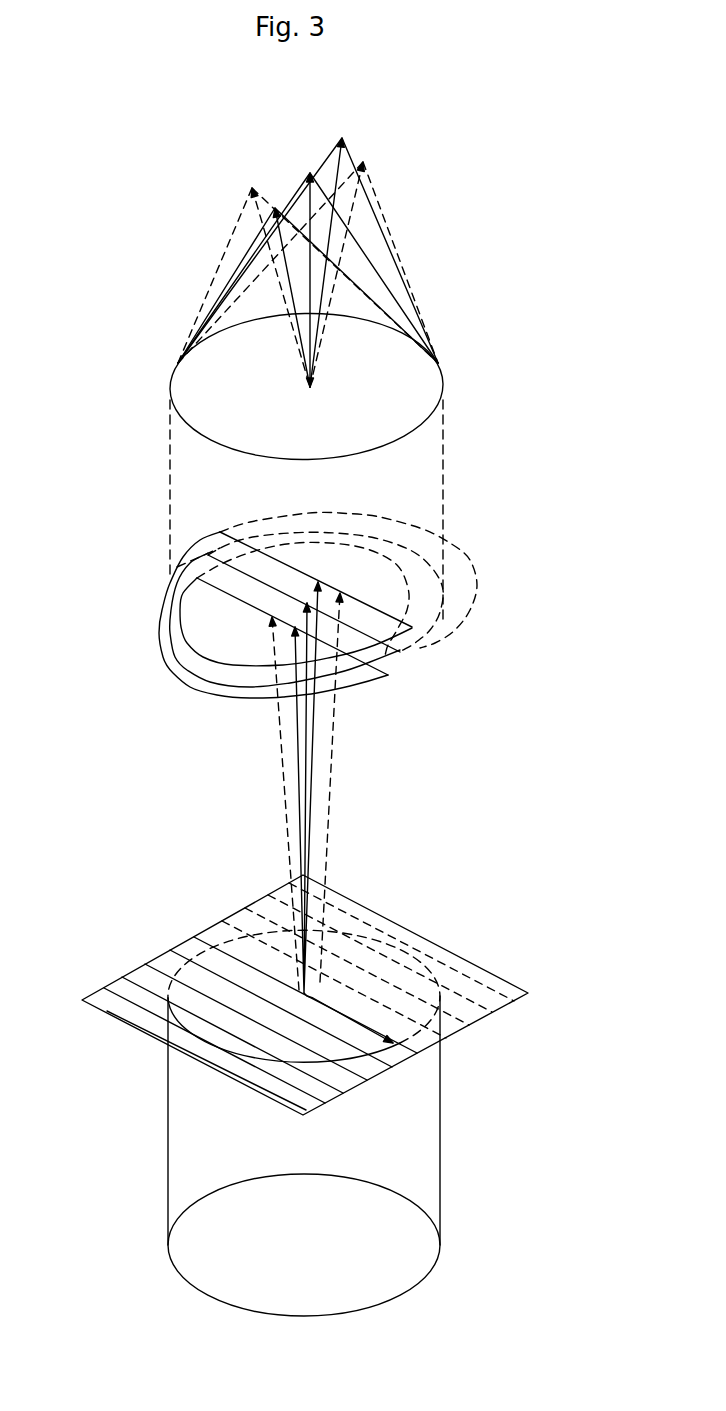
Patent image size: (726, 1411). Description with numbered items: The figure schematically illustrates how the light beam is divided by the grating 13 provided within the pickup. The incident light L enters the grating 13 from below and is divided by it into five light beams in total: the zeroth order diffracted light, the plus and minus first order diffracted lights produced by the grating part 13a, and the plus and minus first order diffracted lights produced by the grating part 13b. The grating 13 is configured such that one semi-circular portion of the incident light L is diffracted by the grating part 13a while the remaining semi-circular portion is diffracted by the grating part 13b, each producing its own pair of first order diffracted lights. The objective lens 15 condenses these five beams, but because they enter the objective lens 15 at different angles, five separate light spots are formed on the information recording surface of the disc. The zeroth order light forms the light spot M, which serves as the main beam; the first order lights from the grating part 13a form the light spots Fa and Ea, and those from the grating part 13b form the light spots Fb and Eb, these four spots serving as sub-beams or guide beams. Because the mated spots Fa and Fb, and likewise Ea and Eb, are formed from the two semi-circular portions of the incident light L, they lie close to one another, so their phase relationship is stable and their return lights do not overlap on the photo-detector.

The objective lens 15 is at (430, 383).
The light spot M is at (308, 172).
The light spot Eb is at (345, 140).
The light spot Ea is at (368, 167).
The light spot Fb is at (276, 205).
The light spot Fa is at (253, 193).
The grating 13 is at (388, 918).
The grating part 13a is at (500, 983).
The grating part 13b is at (90, 997).
The incident light L is at (430, 1113).